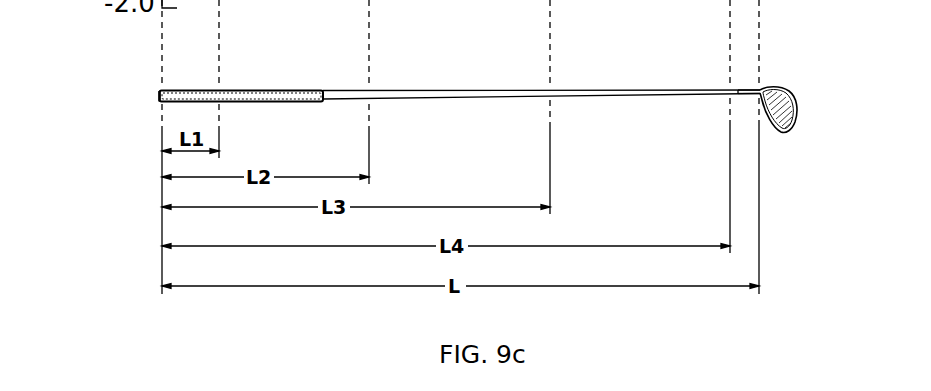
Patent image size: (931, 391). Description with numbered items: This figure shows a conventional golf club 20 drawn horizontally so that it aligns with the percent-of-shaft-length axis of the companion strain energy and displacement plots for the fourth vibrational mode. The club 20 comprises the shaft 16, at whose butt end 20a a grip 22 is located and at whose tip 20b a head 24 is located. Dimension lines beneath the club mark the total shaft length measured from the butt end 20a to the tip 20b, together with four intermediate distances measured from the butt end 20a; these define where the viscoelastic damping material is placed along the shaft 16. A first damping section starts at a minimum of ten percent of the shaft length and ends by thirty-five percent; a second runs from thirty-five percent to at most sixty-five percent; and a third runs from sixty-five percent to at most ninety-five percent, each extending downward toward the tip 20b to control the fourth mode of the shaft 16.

The shaft 16 is at (601, 90).
The golf club 20 is at (792, 73).
The butt end 20a is at (159, 93).
The tip 20b is at (759, 90).
The grip 22 is at (250, 90).
The head 24 is at (793, 114).